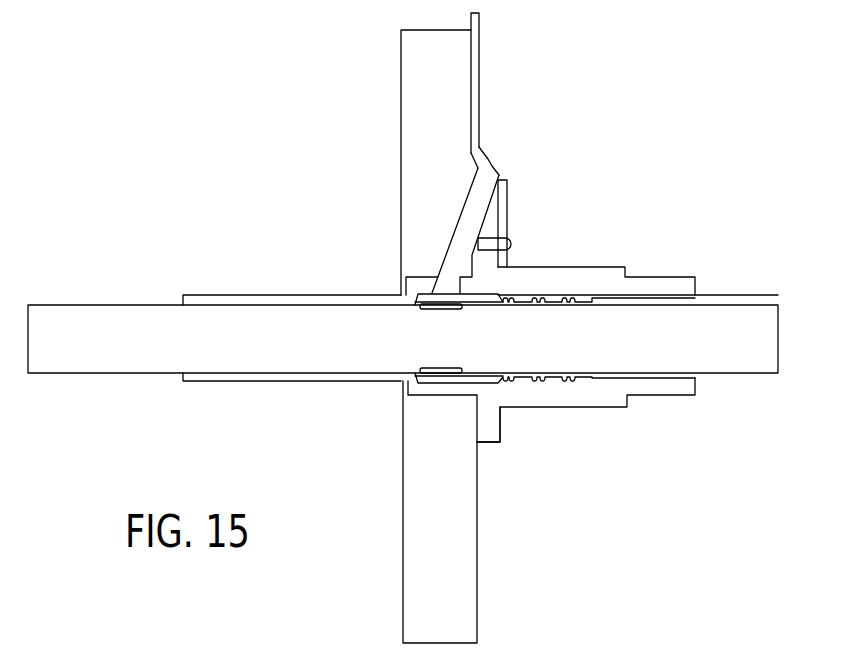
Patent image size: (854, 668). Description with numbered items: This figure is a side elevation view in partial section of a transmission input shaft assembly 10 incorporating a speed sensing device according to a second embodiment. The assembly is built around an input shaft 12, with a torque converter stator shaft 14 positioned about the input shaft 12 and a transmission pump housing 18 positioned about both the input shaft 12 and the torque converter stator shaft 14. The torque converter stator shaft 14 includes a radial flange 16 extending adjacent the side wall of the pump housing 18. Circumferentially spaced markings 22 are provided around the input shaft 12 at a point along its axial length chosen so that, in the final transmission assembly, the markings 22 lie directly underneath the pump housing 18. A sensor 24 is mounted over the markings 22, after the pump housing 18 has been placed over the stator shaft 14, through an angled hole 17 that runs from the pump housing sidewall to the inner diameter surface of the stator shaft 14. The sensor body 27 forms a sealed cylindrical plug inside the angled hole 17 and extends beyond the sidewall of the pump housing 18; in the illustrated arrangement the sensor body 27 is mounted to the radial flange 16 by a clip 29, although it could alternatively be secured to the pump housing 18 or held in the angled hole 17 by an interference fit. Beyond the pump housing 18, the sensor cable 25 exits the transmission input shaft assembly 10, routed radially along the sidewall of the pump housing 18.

The transmission input shaft assembly 10 is at (638, 143).
The input shaft 12 is at (98, 375).
The torque converter stator shaft 14 is at (300, 384).
The radial flange 16 is at (503, 422).
The angled hole 17 is at (433, 287).
The transmission pump housing 18 is at (478, 575).
The circumferentially spaced markings 22 is at (447, 308).
The sensor 24 is at (465, 193).
The sensor cable 25 is at (481, 34).
The sensor body 27 is at (499, 199).
The clip 29 is at (499, 164).